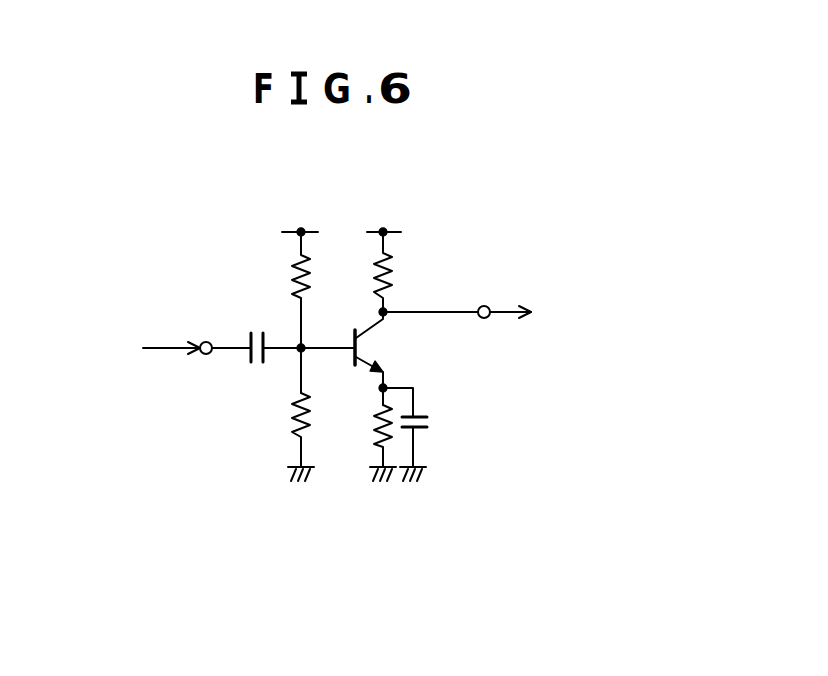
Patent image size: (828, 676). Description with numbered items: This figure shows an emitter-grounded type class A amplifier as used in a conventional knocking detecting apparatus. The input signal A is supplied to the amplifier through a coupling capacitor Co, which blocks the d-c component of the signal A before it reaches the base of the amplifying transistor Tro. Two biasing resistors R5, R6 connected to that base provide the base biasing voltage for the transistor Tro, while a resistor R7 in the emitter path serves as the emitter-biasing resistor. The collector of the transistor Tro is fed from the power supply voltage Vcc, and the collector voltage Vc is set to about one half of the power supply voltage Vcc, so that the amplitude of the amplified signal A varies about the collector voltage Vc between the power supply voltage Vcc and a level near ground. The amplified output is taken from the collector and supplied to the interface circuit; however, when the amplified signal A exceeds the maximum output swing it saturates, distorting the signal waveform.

The signal A is at (171, 349).
The coupling capacitor Co is at (257, 332).
The biasing resistor R5 is at (288, 281).
The biasing resistor R6 is at (290, 412).
The emitter-biasing resistor R7 is at (378, 414).
The power supply voltage Vcc is at (384, 227).
The collector voltage Vc is at (390, 300).
The amplifying transistor Tro is at (385, 346).